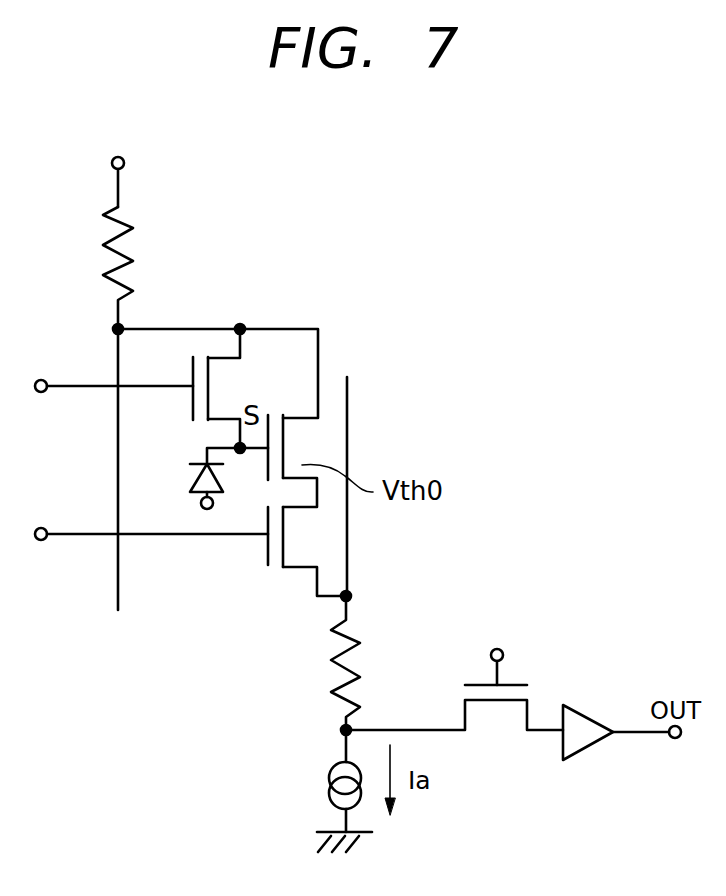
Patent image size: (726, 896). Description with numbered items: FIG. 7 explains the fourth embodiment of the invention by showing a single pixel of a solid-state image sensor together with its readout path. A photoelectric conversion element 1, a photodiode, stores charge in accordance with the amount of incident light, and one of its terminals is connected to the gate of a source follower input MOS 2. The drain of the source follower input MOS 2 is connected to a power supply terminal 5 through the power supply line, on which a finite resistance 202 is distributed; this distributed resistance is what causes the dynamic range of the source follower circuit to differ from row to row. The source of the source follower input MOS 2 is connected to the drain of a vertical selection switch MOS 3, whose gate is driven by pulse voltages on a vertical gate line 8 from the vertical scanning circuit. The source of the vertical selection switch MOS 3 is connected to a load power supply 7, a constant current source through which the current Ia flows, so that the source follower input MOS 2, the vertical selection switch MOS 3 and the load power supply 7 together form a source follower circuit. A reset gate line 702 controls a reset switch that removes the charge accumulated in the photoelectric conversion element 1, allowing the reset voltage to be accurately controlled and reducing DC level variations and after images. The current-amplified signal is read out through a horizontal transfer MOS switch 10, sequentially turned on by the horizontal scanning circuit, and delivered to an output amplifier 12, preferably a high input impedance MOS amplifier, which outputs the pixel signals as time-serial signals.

The power supply terminal 5 is at (115, 157).
The resistance 202 is at (110, 236).
The reset gate line 702 is at (80, 387).
The load power supply 7 is at (235, 390).
The photoelectric conversion element 1 is at (196, 481).
The source follower input MOS 2 is at (307, 447).
The vertical selection switch MOS 3 is at (305, 537).
The vertical gate line 8 is at (78, 535).
The horizontal transfer MOS switch 10 is at (517, 683).
The output amplifier 12 is at (585, 745).